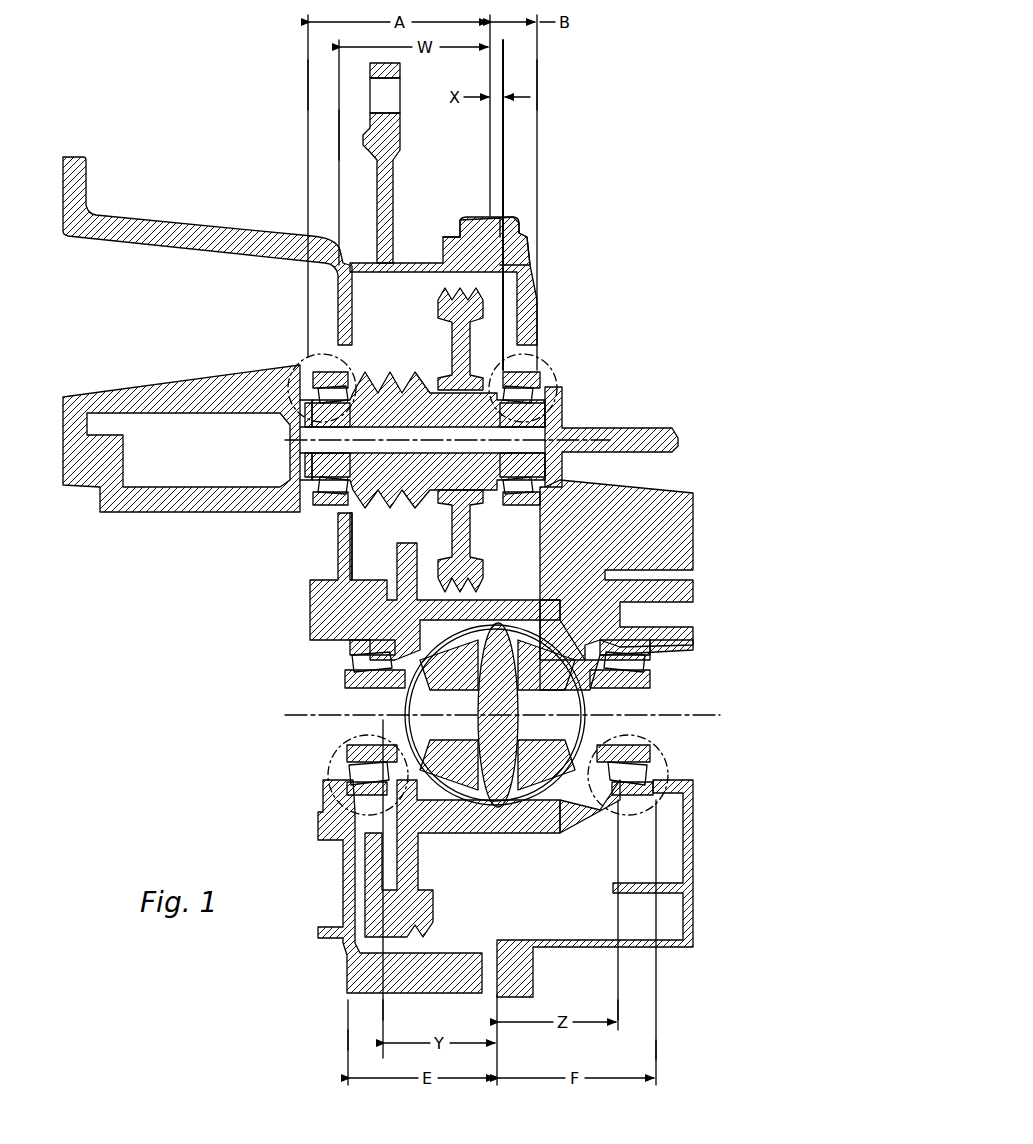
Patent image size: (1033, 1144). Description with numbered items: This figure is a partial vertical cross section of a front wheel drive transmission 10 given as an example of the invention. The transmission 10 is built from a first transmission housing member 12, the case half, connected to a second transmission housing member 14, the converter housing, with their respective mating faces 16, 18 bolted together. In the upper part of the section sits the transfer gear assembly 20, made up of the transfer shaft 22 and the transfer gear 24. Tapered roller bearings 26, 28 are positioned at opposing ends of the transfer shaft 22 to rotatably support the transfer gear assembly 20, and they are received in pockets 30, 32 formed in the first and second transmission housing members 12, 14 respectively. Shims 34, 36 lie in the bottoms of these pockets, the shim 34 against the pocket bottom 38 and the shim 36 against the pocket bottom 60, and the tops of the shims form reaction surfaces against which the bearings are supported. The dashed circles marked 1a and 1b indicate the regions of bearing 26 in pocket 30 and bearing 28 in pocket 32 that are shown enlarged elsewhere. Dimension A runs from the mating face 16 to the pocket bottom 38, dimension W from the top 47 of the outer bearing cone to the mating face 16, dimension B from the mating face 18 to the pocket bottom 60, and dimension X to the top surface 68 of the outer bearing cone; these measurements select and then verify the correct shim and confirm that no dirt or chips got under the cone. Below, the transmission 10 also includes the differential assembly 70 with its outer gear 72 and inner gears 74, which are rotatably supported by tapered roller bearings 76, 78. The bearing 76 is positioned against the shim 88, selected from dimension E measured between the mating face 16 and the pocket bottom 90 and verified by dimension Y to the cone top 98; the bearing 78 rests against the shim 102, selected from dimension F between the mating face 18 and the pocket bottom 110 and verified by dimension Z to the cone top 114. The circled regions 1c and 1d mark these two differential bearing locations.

The front wheel drive transmission 10 is at (115, 112).
The first transmission housing member 12 is at (105, 388).
The second transmission housing member 14 is at (675, 435).
The mating face 16 is at (512, 222).
The mating face 18 is at (470, 222).
The transfer gear assembly 20 is at (380, 335).
The transfer shaft 22 is at (395, 372).
The transfer gear 24 is at (442, 315).
The tapered roller bearing 26 is at (297, 398).
The tapered roller bearing 28 is at (540, 398).
The pocket 30 is at (303, 355).
The pocket 32 is at (533, 355).
The shim 34 is at (292, 375).
The shim 36 is at (525, 368).
The pocket bottom 38 is at (308, 85).
The top of outer tapered bearing cone 47 is at (339, 138).
The pocket bottom 60 is at (537, 88).
The top surface of outer tapered bearing cone 68 is at (503, 146).
The differential assembly 70 is at (335, 695).
The outer gear 72 is at (372, 527).
The inner gears 74 is at (540, 690).
The tapered roller bearing 76 is at (330, 660).
The tapered roller bearing 78 is at (655, 663).
The shim 88 is at (333, 790).
The pocket bottom 90 is at (348, 1040).
The top of outer tapered bearing cone 98 is at (380, 1010).
The shim 102 is at (680, 790).
The pocket bottom 110 is at (656, 1035).
The top of outer tapered bearing cone 114 is at (618, 1012).
The enlarged view of bearing 26 in pocket 30 1a is at (262, 372).
The enlarged view of bearing 28 in pocket 32 1b is at (530, 315).
The enlarged view of bearing 76 1c is at (325, 750).
The enlarged view of bearing 78 1d is at (660, 750).